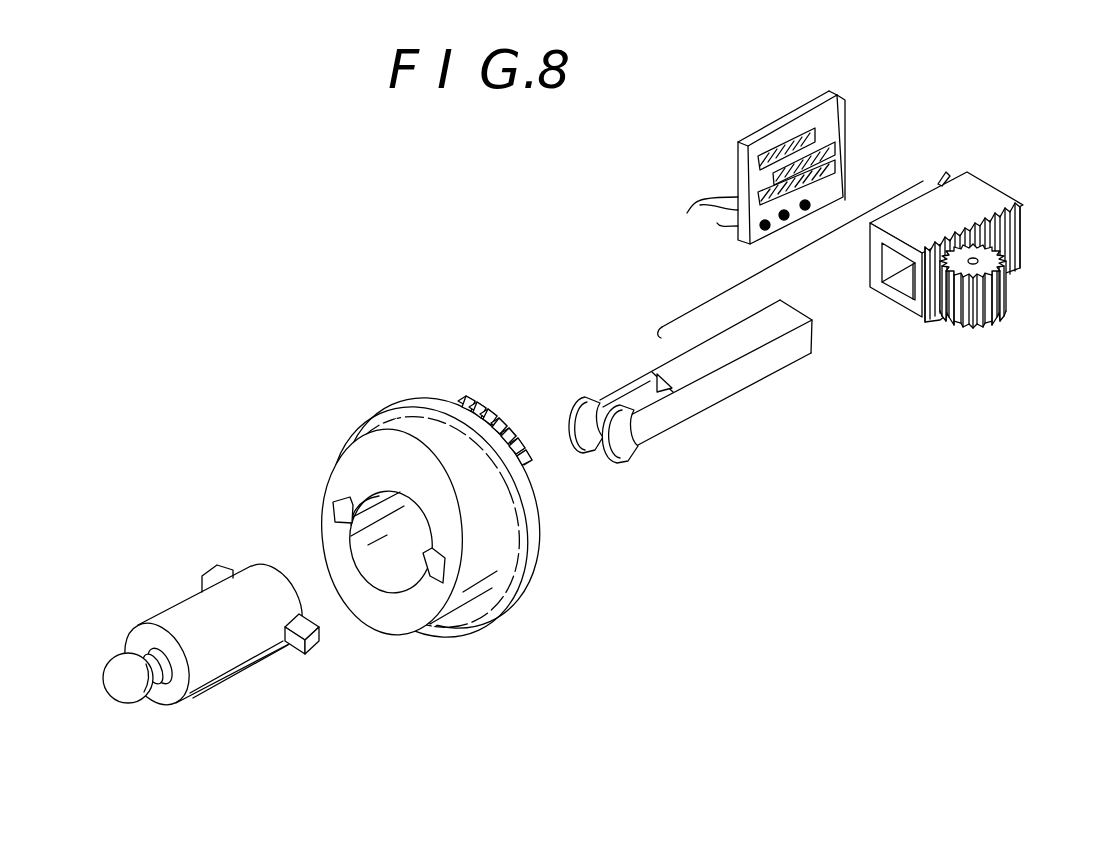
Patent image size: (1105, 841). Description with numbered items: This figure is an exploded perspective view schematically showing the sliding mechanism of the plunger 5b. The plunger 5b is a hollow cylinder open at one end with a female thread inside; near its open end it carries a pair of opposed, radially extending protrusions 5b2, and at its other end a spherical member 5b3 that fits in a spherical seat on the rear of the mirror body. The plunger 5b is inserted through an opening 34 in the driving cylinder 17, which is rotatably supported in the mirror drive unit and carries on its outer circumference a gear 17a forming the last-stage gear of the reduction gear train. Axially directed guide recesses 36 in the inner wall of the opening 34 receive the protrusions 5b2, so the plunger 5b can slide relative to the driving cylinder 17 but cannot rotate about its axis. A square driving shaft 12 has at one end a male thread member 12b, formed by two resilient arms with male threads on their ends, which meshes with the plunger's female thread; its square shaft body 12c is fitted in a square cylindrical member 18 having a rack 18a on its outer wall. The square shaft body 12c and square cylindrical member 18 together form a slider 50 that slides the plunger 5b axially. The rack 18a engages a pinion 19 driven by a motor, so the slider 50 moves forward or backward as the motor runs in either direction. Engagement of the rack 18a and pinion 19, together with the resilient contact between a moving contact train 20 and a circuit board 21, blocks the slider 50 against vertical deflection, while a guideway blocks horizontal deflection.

The plunger 5b is at (236, 654).
The protrusions 5b2 is at (317, 645).
The spherical member 5b3 is at (133, 697).
The square driving shaft 12 is at (700, 415).
The male thread member 12b is at (617, 458).
The square shaft body 12c is at (773, 362).
The driving cylinder 17 is at (422, 503).
The gear 17a is at (523, 577).
The square cylindrical member 18 is at (986, 220).
The rack 18a is at (1012, 236).
The pinion 19 is at (1003, 302).
The moving contact train 20 is at (942, 180).
The circuit board 21 is at (820, 108).
The opening 34 is at (402, 546).
The guide recesses 36 is at (337, 512).
The slider 50 is at (728, 290).